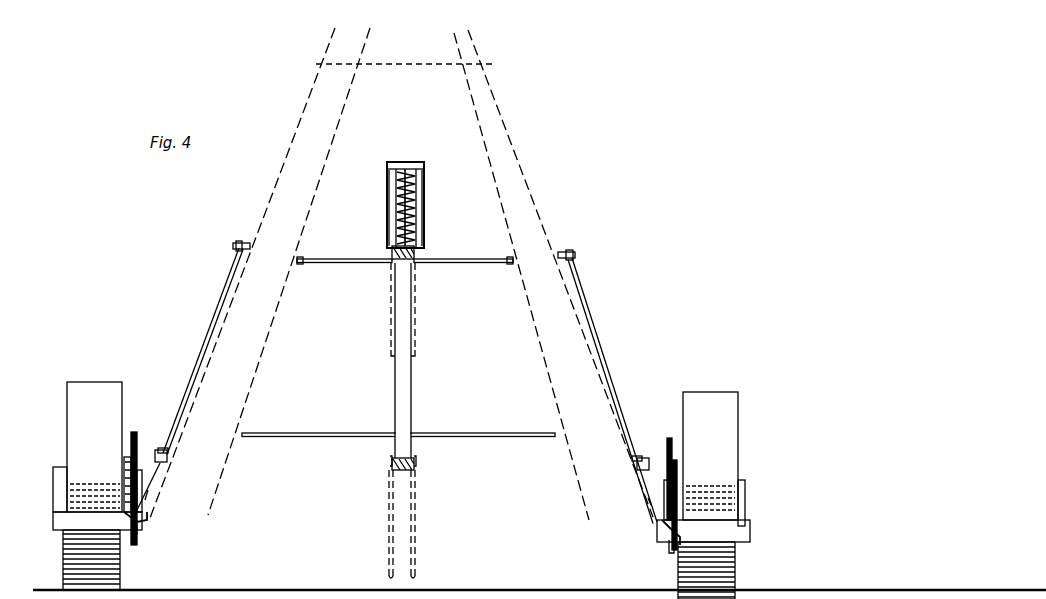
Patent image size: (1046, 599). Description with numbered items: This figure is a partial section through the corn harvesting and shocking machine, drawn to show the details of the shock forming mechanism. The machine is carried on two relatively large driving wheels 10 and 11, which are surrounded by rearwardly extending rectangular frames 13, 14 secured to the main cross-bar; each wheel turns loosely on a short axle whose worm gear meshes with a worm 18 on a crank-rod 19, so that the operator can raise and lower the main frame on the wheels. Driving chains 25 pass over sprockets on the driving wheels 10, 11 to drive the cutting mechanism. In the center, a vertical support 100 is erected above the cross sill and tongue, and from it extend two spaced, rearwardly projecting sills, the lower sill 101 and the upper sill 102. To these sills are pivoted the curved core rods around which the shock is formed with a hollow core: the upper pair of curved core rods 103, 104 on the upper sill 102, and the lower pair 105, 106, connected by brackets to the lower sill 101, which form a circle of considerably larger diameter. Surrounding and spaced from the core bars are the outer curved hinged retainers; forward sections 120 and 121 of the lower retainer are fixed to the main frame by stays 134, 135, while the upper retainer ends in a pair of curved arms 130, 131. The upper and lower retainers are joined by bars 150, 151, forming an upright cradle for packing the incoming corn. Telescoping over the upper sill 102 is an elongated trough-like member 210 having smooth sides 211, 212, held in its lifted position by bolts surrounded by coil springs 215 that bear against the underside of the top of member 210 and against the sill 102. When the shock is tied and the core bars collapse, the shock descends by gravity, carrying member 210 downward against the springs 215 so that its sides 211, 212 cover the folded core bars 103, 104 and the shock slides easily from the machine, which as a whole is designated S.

The tripod stand S is at (532, 182).
The driving wheel 10 is at (87, 447).
The driving wheel 11 is at (714, 459).
The rectangular frame 13 is at (722, 535).
The rectangular frame 14 is at (53, 520).
The worm 18 is at (135, 432).
The crank-rod 19 is at (148, 523).
The driving chain 25 is at (133, 457).
The vertical support 100 is at (412, 390).
The lower sill 101 is at (414, 466).
The upper sill 102 is at (414, 270).
The upper curved core rod 103 is at (478, 258).
The upper curved core rod 104 is at (352, 258).
The lower curved core rod 105 is at (492, 432).
The lower curved core rod 106 is at (302, 432).
The forward section of lower retainer 120 is at (168, 460).
The forward section of lower retainer 121 is at (636, 466).
The curved arm 130 is at (567, 250).
The curved arm 131 is at (241, 242).
The stay 134 is at (150, 492).
The stay 135 is at (648, 500).
The bar 150 is at (205, 322).
The bar 151 is at (596, 318).
The trough-like member 210 is at (405, 162).
The side of trough-like member 211 is at (389, 190).
The side of trough-like member 212 is at (424, 192).
The coil spring 215 is at (412, 178).